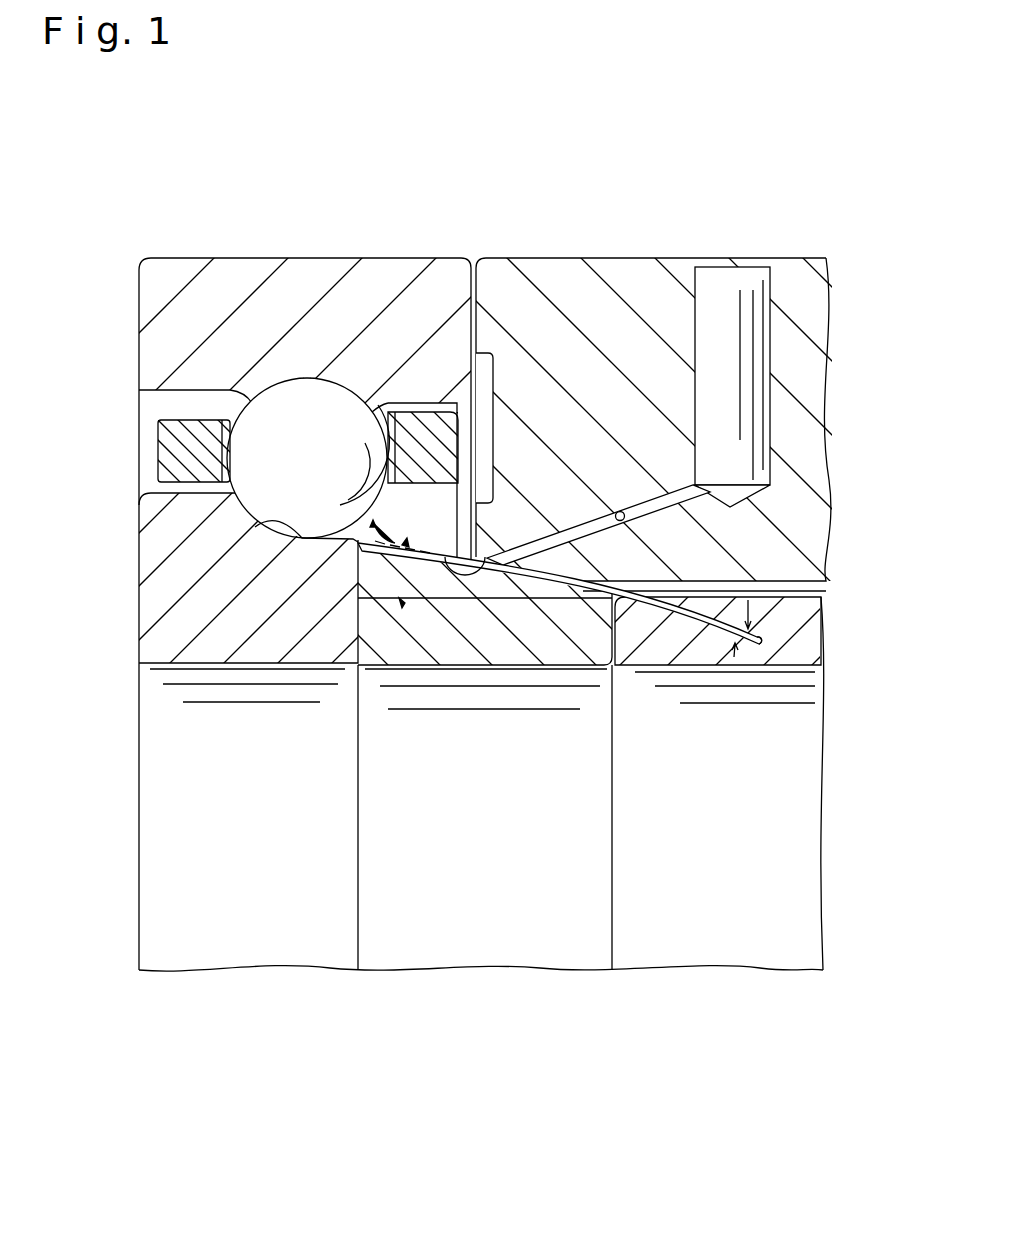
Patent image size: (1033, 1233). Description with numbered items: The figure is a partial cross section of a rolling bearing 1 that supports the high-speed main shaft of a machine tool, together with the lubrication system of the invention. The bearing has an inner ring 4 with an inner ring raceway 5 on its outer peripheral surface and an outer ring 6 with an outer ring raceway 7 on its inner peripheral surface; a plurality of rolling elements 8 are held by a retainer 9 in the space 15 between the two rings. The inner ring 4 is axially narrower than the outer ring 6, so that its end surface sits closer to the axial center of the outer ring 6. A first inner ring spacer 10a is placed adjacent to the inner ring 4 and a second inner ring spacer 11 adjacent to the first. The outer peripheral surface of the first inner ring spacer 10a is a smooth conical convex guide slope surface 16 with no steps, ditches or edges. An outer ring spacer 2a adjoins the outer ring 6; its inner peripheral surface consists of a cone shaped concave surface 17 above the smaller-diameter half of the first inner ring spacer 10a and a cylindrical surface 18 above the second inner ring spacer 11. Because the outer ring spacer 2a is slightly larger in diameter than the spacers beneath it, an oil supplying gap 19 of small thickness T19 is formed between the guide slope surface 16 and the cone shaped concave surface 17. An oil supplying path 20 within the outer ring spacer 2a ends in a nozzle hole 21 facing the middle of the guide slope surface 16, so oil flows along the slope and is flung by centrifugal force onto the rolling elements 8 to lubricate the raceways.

The rolling bearing 1 is at (158, 245).
The outer ring spacer 2a is at (637, 268).
The inner ring 4 is at (170, 642).
The inner ring raceway 5 is at (258, 523).
The outer ring 6 is at (240, 266).
The outer ring raceway 7 is at (309, 376).
The rolling elements 8 is at (267, 417).
The retainer 9 is at (165, 463).
The first inner ring spacer 10a is at (463, 652).
The second inner ring spacer 11 is at (657, 655).
The space 15 is at (438, 555).
The guide slope surface 16 is at (556, 545).
The cone shaped concave surface 17 is at (445, 410).
The cylindrical surface 18 is at (783, 582).
The oil supplying gap 19 is at (553, 536).
The oil supplying path 20 is at (697, 303).
The nozzle hole 21 is at (617, 511).
The thickness of the oil supplying gap T19 is at (762, 641).